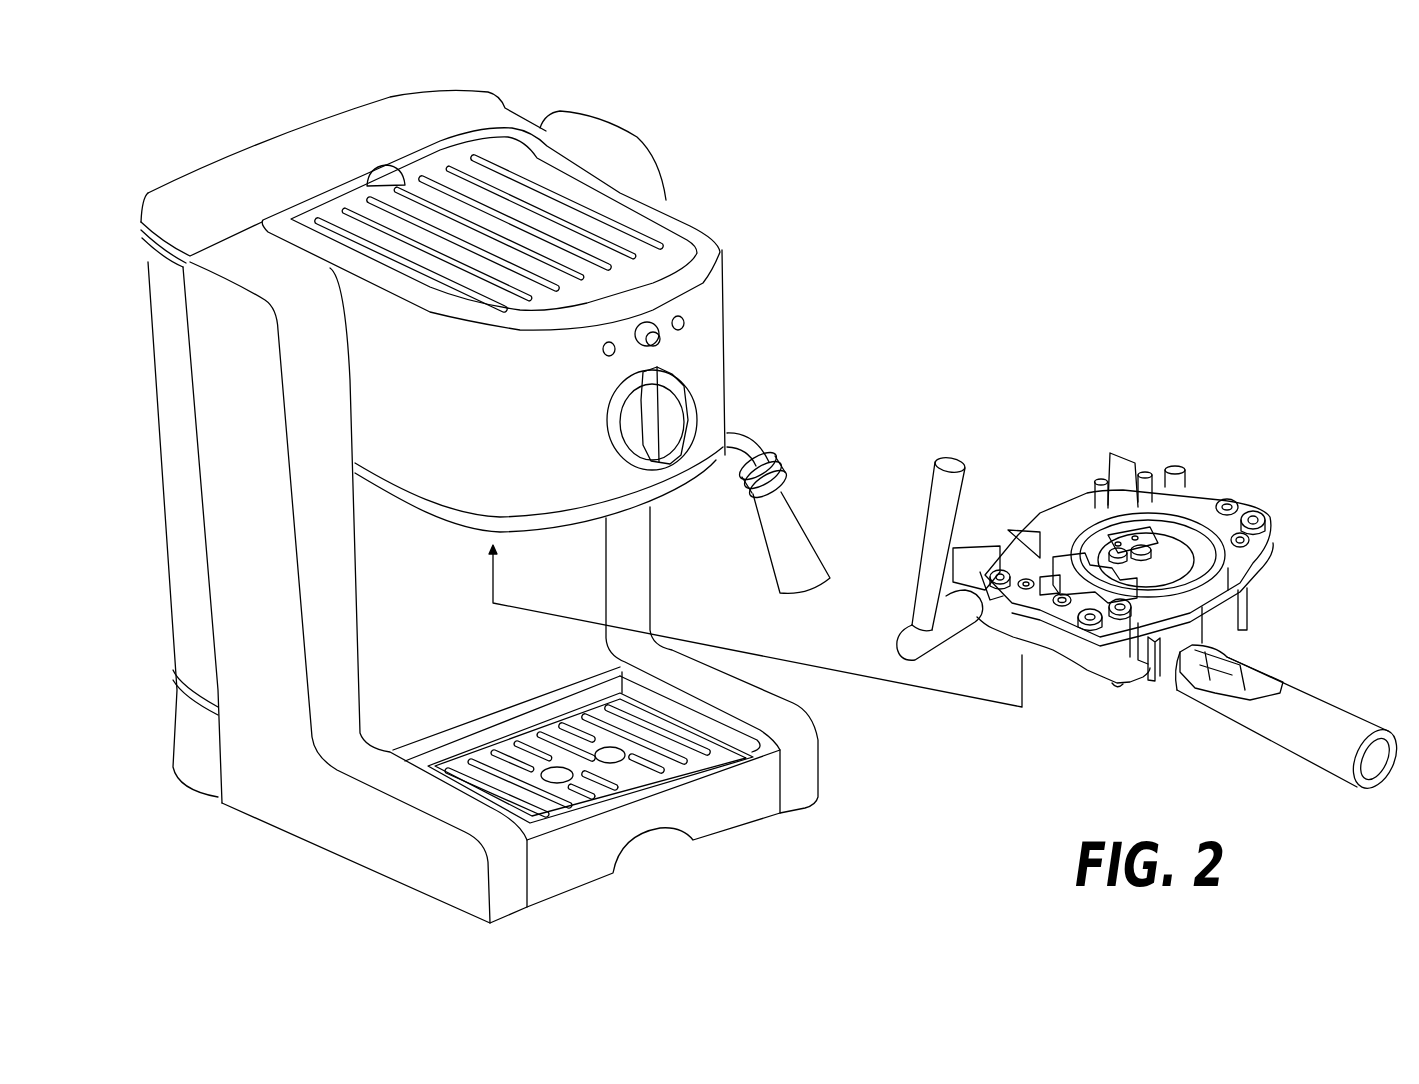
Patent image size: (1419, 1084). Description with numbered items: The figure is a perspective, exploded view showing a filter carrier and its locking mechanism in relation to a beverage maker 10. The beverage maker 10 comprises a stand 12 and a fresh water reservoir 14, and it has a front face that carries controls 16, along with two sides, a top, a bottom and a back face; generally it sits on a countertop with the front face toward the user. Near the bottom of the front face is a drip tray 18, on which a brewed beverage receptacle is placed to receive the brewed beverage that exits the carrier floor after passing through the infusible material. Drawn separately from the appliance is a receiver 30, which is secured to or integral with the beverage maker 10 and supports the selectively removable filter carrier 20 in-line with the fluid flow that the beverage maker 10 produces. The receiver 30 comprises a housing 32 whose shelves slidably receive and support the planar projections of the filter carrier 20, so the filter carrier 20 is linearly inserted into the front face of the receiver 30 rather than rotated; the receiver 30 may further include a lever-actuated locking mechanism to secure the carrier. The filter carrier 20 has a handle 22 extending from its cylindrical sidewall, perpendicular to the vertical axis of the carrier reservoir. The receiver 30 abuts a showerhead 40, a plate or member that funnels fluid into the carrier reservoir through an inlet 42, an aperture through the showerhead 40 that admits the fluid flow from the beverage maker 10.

The beverage maker 10 is at (812, 210).
The stand 12 is at (230, 482).
The fresh water reservoir 14 is at (197, 496).
The controls 16 is at (684, 374).
The drip tray 18 is at (570, 785).
The filter carrier 20 is at (1332, 697).
The handle 22 is at (1280, 735).
The receiver 30 is at (1100, 692).
The housing 32 is at (953, 580).
The showerhead 40 is at (1175, 547).
The inlet 42 is at (1080, 520).